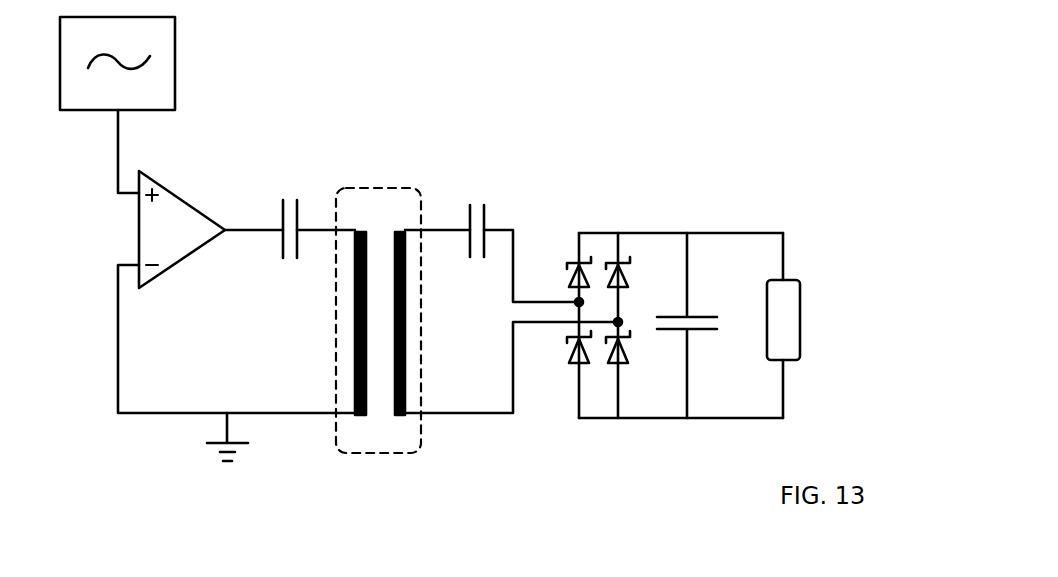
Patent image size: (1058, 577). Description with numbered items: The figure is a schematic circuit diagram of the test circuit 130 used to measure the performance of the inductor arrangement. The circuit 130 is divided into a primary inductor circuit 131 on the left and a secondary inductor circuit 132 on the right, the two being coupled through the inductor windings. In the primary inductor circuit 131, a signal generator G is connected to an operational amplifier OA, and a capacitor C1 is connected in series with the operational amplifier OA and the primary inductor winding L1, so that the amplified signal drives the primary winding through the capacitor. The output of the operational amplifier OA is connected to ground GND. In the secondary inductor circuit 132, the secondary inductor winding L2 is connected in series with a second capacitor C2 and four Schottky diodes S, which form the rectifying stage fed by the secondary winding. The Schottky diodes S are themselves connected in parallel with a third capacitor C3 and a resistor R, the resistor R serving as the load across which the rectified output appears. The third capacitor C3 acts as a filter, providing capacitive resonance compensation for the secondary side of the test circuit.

The circuit 130 is at (469, 282).
The primary inductor circuit 131 is at (335, 282).
The secondary inductor circuit 132 is at (453, 372).
The signal generator G is at (175, 32).
The operational amplifier OA is at (178, 213).
The capacitor C1 is at (292, 192).
The second capacitor C2 is at (476, 197).
The primary inductor winding L1 is at (357, 415).
The secondary inductor winding L2 is at (400, 415).
The Schottky diodes S is at (579, 245).
The third capacitor C3 is at (700, 302).
The resistor R is at (805, 312).
The ground GND is at (240, 458).